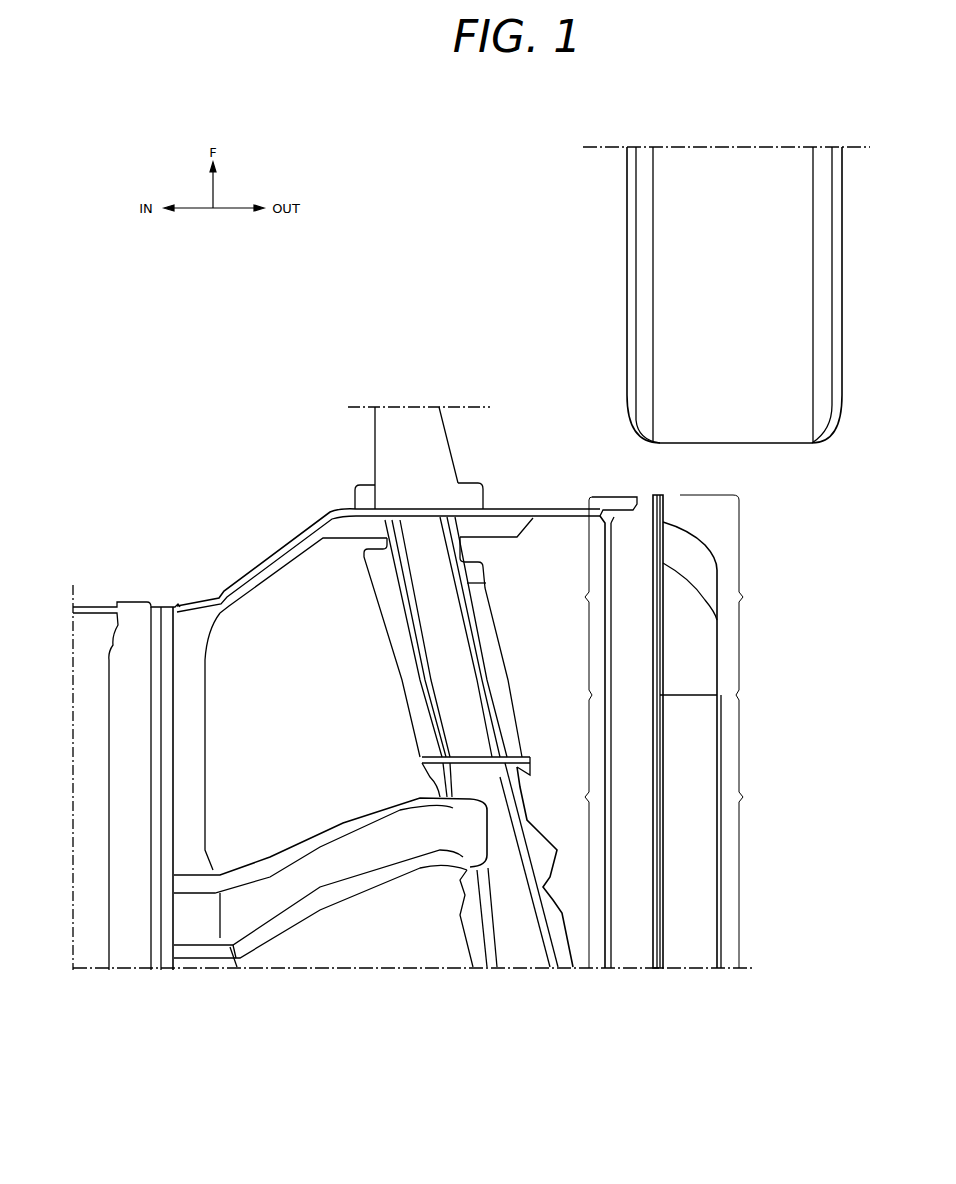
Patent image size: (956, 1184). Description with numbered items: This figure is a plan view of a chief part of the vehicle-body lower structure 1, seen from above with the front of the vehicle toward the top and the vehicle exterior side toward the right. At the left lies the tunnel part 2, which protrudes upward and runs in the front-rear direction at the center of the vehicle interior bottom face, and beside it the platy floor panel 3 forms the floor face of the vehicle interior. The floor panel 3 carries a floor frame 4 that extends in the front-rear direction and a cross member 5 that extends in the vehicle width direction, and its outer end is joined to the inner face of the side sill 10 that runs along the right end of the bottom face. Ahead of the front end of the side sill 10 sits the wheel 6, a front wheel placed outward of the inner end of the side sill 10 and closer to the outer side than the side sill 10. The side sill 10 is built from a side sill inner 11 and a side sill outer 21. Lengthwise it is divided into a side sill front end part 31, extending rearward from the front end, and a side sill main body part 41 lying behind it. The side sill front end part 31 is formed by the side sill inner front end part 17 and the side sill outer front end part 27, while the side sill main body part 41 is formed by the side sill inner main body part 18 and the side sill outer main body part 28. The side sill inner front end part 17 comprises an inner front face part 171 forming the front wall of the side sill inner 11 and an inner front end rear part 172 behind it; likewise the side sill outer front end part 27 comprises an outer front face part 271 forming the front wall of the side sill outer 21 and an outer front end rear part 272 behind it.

The vehicle-body lower structure 1 is at (226, 353).
The tunnel part 2 is at (85, 731).
The floor panel 3 is at (287, 578).
The floor frame 4 is at (393, 654).
The cross member 5 is at (308, 833).
The wheel 6 is at (626, 272).
The side sill 10 is at (674, 714).
The side sill inner 11 is at (605, 742).
The side sill inner front end part 17 is at (580, 714).
The inner front face part 171 is at (637, 500).
The inner front end rear part 172 is at (603, 655).
The side sill inner main body part 18 is at (576, 831).
The side sill outer 21 is at (720, 757).
The side sill outer front end part 27 is at (735, 595).
The outer front face part 271 is at (684, 532).
The outer front end rear part 272 is at (720, 668).
The side sill outer main body part 28 is at (758, 831).
The side sill front end part 31 is at (598, 1050).
The side sill main body part 41 is at (688, 1050).